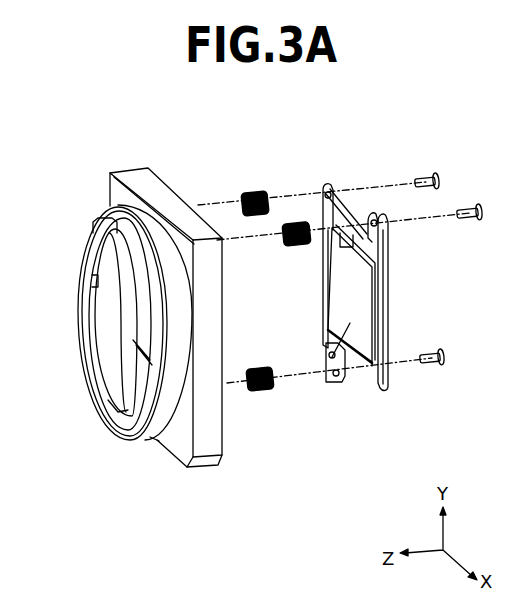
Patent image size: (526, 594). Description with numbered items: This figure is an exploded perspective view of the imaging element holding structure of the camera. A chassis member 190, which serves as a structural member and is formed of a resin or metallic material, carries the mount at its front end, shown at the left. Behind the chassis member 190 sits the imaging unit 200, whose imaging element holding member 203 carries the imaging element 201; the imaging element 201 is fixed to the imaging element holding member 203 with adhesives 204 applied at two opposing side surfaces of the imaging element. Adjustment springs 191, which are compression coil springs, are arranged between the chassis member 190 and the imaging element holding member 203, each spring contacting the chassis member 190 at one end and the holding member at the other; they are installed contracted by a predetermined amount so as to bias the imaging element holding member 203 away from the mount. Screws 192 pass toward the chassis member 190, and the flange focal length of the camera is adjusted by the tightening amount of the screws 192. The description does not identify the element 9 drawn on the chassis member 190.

The lens mount ring 9 is at (83, 235).
The chassis member 190 is at (117, 190).
The adjustment springs 191 is at (295, 223).
The screws 192 is at (470, 204).
The imaging unit 200 is at (359, 299).
The imaging element 201 is at (337, 377).
The imaging element holding member 203 is at (375, 380).
The adhesives 204 is at (343, 213).